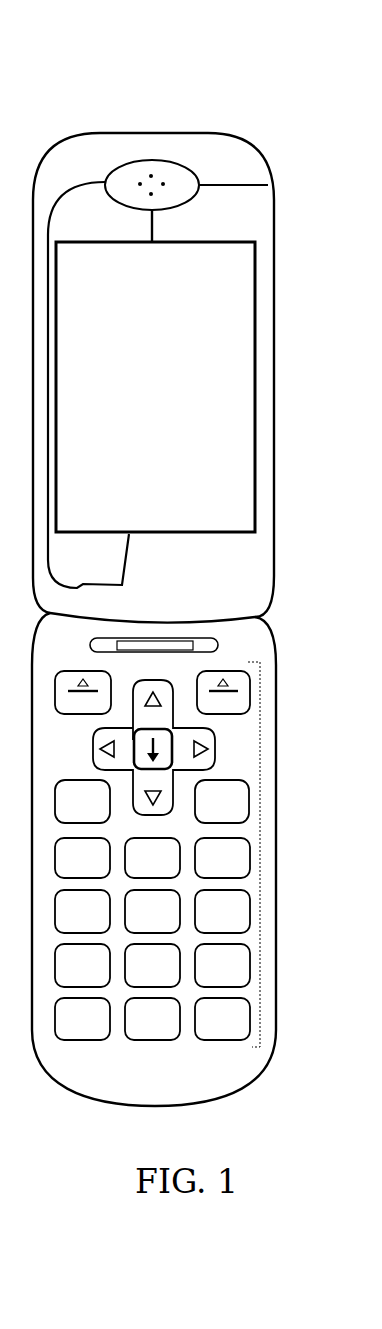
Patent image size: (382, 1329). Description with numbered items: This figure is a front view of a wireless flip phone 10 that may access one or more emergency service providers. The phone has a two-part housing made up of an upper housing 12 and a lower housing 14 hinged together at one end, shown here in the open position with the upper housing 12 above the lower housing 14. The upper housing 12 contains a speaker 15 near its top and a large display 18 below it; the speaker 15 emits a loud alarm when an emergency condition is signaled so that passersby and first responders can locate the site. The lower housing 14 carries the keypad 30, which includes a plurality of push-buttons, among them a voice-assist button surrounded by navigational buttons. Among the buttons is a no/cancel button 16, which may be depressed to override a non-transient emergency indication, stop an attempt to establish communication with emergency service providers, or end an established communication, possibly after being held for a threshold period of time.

The wireless flip phone 10 is at (91, 91).
The upper housing 12 is at (248, 156).
The lower housing 14 is at (275, 665).
The speaker 15 is at (103, 182).
The no/cancel button 16 is at (248, 788).
The display 18 is at (144, 366).
The keypad 30 is at (263, 867).